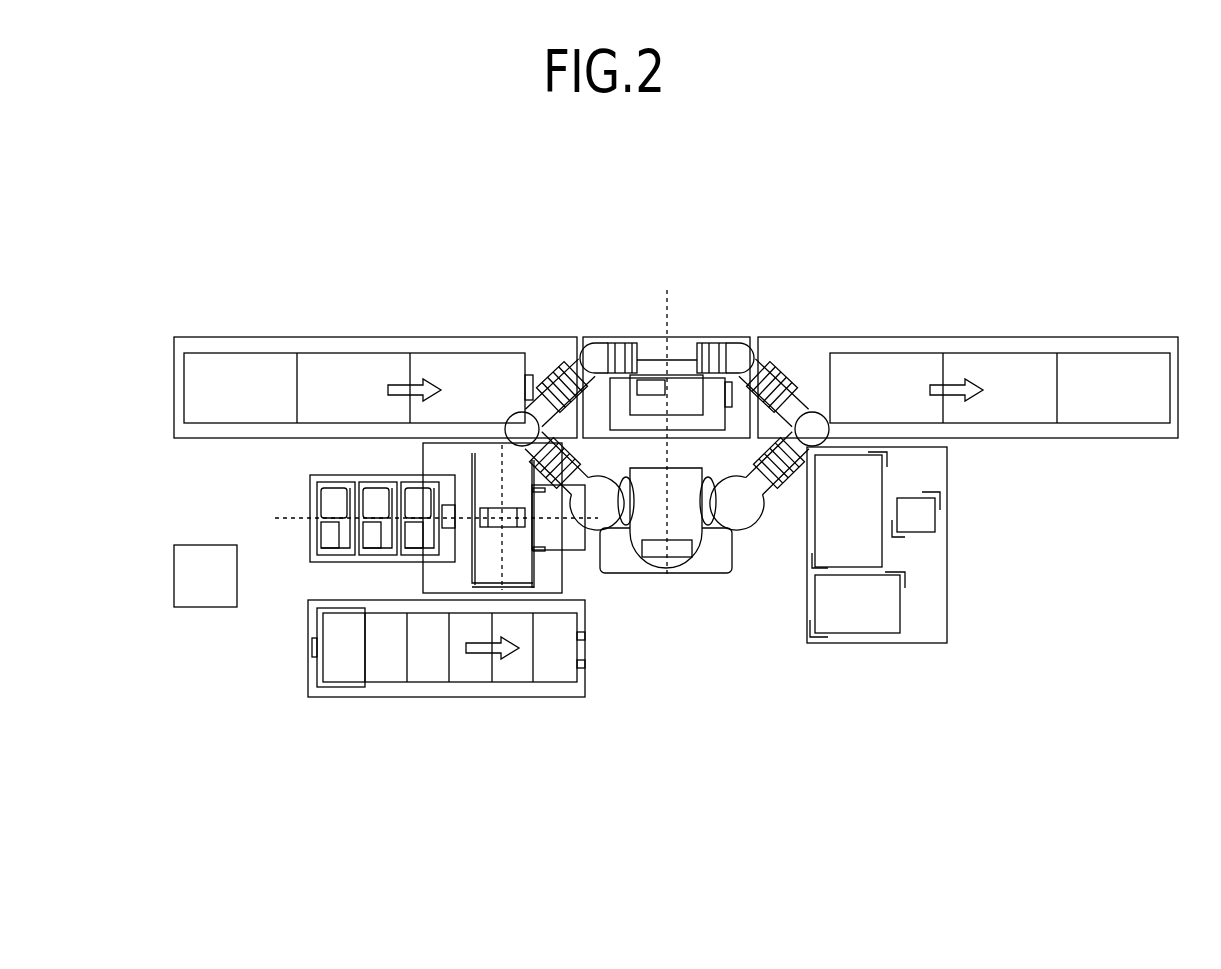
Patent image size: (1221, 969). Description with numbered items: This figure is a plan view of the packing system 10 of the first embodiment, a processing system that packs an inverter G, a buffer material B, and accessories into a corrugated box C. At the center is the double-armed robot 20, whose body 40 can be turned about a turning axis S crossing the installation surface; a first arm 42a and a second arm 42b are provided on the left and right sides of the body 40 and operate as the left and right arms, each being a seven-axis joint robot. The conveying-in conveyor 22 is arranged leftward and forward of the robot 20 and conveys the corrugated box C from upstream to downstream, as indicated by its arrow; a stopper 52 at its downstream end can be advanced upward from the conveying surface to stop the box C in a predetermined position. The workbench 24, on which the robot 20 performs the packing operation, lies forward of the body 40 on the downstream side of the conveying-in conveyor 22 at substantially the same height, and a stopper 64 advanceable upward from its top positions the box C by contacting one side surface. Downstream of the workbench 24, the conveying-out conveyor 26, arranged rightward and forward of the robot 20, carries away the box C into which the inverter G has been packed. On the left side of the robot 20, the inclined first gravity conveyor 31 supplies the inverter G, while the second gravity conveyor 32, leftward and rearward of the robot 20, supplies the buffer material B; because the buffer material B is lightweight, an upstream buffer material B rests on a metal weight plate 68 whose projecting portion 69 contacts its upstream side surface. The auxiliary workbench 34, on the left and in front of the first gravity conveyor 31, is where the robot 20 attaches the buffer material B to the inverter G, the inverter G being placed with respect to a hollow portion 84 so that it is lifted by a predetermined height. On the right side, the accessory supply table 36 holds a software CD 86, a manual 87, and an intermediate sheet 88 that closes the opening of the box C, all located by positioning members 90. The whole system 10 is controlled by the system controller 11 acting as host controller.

The packing system 10 is at (287, 196).
The system controller 11 is at (191, 558).
The double-armed robot 20 is at (709, 578).
The conveying-in conveyor 22 is at (310, 345).
The workbench 24 is at (648, 348).
The conveying-out conveyor 26 is at (803, 352).
The first gravity conveyor 31 is at (316, 546).
The second gravity conveyor 32 is at (391, 688).
The auxiliary workbench 34 is at (556, 567).
The accessory supply table 36 is at (930, 622).
The body 40 is at (660, 555).
The first arm 42a is at (560, 378).
The second arm 42b is at (818, 393).
The stopper 52 is at (520, 385).
The stopper 64 is at (748, 380).
The weight plate 68 is at (320, 676).
The projecting portion 69 is at (312, 645).
The hollow portion 84 is at (492, 520).
The software CD 86 is at (925, 520).
The manual 87 is at (868, 620).
The intermediate sheet 88 is at (827, 527).
The positioning members 90 is at (880, 455).
The corrugated box C is at (215, 363).
The inverter G is at (713, 392).
The turning axis S is at (665, 500).
The buffer material B is at (552, 670).